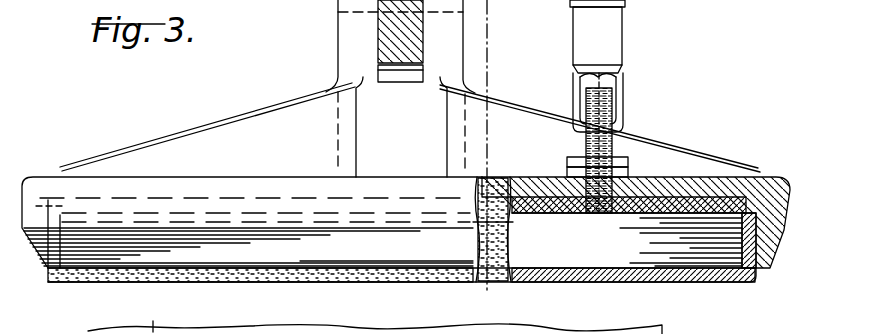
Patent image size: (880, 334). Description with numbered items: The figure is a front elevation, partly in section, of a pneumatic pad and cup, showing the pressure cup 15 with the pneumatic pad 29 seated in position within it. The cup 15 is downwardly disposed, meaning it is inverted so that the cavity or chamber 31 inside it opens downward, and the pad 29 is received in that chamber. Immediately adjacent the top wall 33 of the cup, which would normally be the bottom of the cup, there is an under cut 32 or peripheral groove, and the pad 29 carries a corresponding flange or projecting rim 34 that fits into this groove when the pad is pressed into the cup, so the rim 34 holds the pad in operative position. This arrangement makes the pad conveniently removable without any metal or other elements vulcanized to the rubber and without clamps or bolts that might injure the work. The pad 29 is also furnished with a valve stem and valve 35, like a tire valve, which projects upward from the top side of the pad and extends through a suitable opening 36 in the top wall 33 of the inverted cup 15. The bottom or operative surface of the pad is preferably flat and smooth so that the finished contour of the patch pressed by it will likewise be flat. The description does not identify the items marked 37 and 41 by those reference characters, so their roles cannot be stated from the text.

The pressure cup 15 is at (252, 143).
The pneumatic pad 29 is at (165, 283).
The cavity or chamber 31 is at (767, 197).
The under cut 32 is at (652, 209).
The top wall 33 is at (663, 188).
The flange or projecting rim 34 is at (45, 206).
The valve stem and valve 35 is at (590, 170).
The opening 36 is at (600, 160).
The base 37 is at (573, 283).
The center line 41 is at (500, 289).